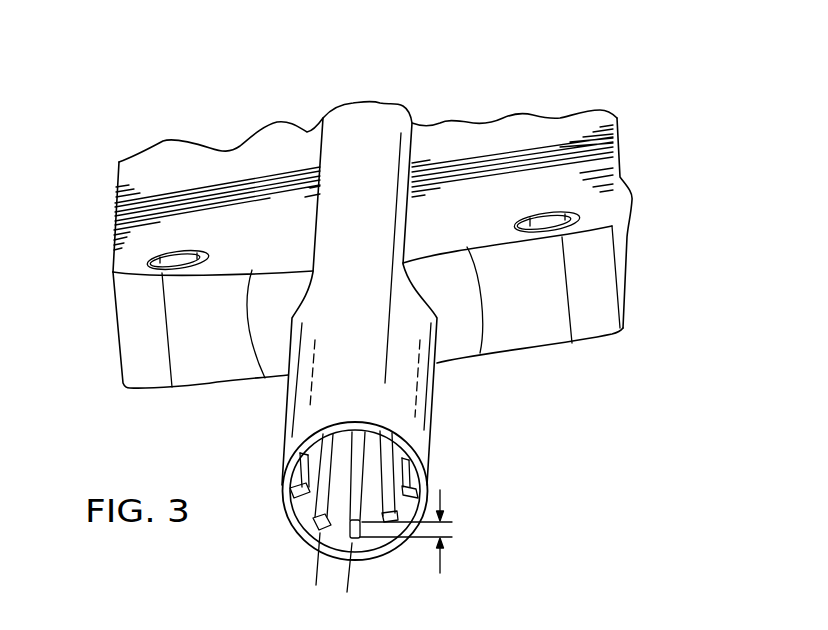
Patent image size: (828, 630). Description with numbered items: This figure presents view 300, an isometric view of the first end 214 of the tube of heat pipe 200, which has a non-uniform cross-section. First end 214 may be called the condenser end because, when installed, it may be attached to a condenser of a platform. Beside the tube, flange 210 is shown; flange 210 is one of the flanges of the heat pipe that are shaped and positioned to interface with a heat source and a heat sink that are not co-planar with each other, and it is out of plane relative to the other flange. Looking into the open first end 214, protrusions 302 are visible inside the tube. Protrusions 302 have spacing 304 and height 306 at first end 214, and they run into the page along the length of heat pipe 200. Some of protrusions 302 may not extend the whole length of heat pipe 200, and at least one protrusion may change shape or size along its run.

The view 300 is at (106, 58).
The heat pipe 200 is at (217, 112).
The flange 210 is at (115, 327).
The first end 214 is at (438, 455).
The protrusions 302 is at (350, 444).
The spacing 304 is at (380, 573).
The height 306 is at (440, 557).